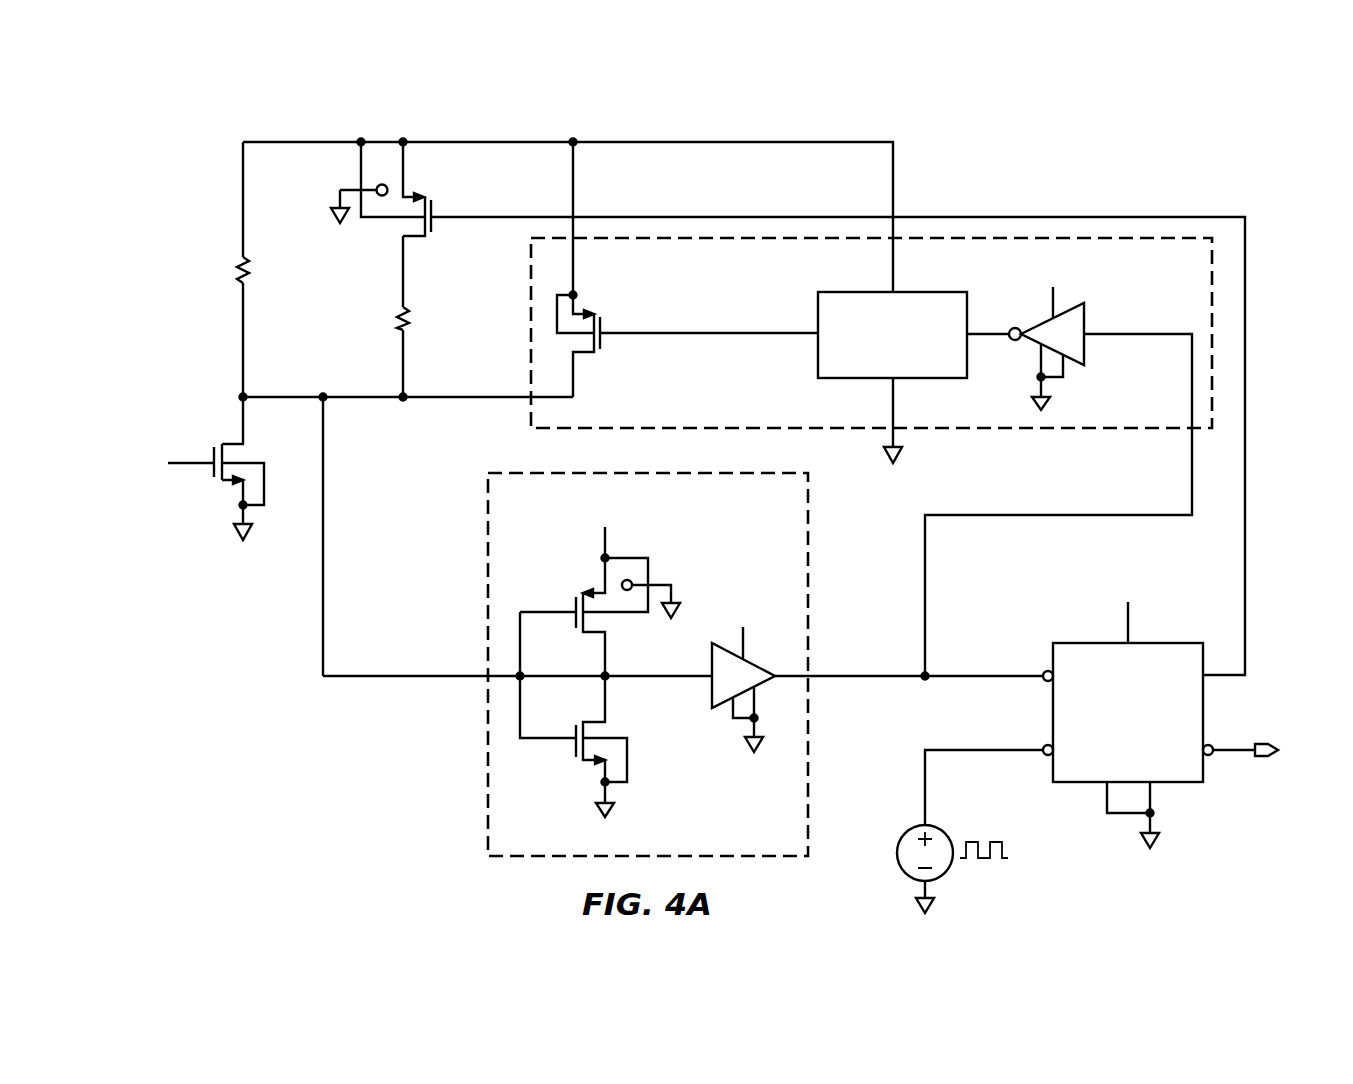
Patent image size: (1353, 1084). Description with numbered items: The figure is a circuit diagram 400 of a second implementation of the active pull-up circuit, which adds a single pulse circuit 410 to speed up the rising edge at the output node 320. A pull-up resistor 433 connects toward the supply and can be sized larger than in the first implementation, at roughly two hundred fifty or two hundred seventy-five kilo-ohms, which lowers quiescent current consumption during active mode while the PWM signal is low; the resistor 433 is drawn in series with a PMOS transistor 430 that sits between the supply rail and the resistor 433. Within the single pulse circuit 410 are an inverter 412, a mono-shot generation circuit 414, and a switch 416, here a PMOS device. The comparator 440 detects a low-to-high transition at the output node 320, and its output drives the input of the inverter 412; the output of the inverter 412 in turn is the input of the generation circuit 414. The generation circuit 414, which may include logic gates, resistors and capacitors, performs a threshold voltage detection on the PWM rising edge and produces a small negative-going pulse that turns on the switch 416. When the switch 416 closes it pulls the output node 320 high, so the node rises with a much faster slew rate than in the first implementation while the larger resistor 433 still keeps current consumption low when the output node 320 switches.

The circuit diagram 400 is at (1202, 142).
The output node 320 is at (327, 402).
The PMOS transistor MP3 430 is at (435, 229).
The resistor 433 is at (399, 316).
The single pulse circuit 410 is at (1094, 438).
The switch 416 is at (604, 345).
The mono-shot generation circuit 414 is at (817, 357).
The inverter 412 is at (1086, 351).
The comparator 440 is at (478, 776).